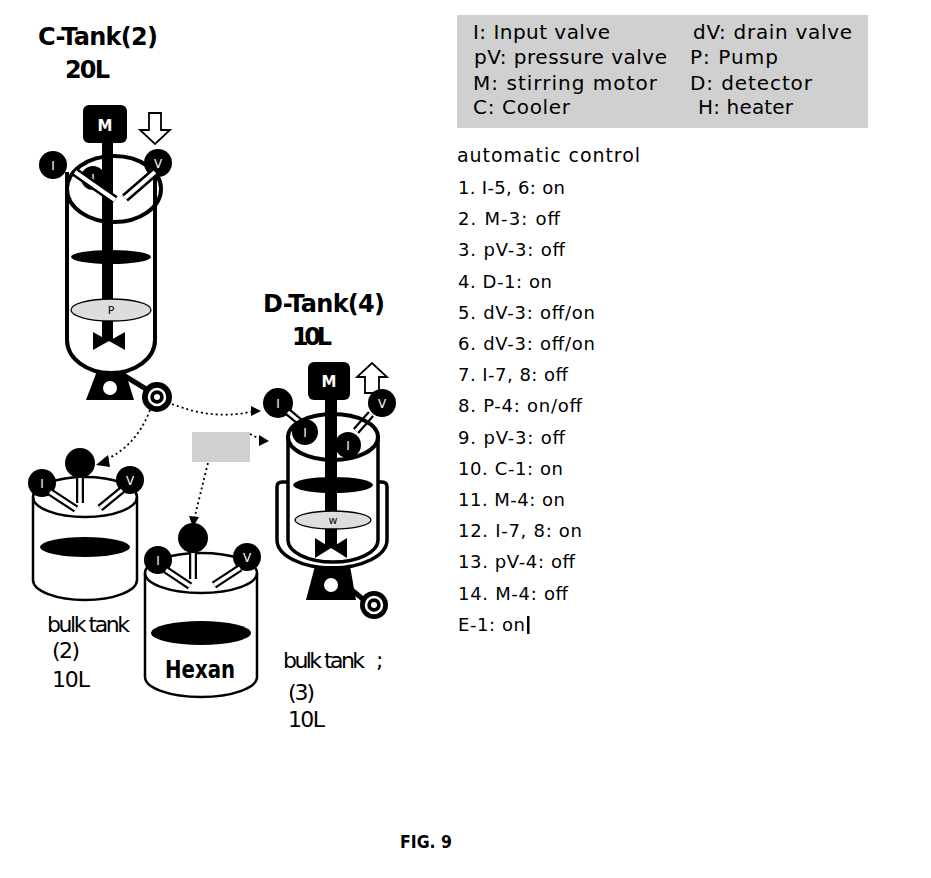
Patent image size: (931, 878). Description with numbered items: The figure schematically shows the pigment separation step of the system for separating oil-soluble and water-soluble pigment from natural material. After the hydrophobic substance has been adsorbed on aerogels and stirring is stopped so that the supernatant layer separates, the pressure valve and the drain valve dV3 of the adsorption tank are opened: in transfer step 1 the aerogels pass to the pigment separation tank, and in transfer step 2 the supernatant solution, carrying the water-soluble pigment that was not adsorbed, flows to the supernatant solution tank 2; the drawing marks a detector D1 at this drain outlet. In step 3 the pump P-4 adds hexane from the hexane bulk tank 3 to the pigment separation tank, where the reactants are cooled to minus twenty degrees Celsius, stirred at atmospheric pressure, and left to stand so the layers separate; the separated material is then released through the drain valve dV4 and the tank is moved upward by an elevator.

The step 1 transfer path (C-tank drain to D-tank) 1 is at (216, 402).
The supernatant solution tank 2 is at (123, 438).
The step 3 transfer path (pump P-4 to hexan tank) 3 is at (210, 495).
The detector D-1 D1 is at (147, 382).
The drain valve dV3 is at (88, 386).
The drain valve dV4 is at (346, 594).
The pump P-4 is at (230, 447).